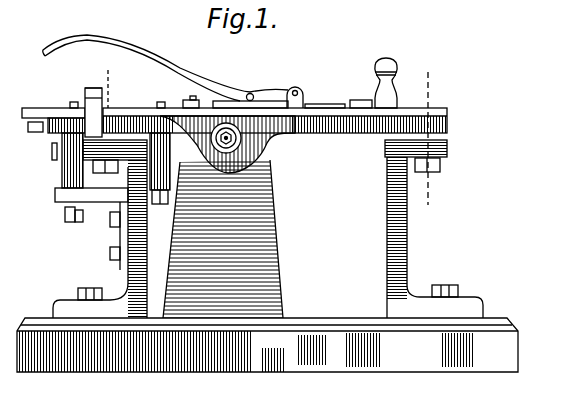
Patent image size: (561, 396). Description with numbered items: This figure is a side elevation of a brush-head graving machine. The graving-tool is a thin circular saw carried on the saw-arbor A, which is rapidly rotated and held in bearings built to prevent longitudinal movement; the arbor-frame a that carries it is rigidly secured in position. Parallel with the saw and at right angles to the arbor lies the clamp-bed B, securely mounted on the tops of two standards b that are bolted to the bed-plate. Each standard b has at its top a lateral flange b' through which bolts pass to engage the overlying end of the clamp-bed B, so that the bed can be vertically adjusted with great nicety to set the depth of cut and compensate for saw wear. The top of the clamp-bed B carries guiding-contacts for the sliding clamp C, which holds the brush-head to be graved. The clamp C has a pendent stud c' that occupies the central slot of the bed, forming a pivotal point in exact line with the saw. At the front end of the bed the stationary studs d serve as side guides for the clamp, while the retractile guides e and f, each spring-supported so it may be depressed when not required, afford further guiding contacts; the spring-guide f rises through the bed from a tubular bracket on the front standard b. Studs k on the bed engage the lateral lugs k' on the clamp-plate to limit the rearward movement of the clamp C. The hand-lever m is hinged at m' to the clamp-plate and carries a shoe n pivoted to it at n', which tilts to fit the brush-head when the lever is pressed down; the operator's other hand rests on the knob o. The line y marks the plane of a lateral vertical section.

The saw-arbor A is at (232, 141).
The arbor-frame a is at (223, 239).
The clamp-bed B is at (275, 140).
The standards b is at (268, 225).
The lateral flange b' is at (424, 146).
The sliding clamp C is at (168, 108).
The pendent stud c' is at (361, 96).
The stationary studs d is at (93, 80).
The retractile guide e is at (160, 144).
The spring-guide f is at (70, 104).
The studs k is at (191, 81).
The lateral lugs k' is at (326, 87).
The hand-lever m is at (165, 68).
The hinge m' is at (293, 90).
The shoe n is at (123, 91).
The shoe pivot n' is at (257, 80).
The knob o is at (386, 76).
The section line y is at (424, 149).